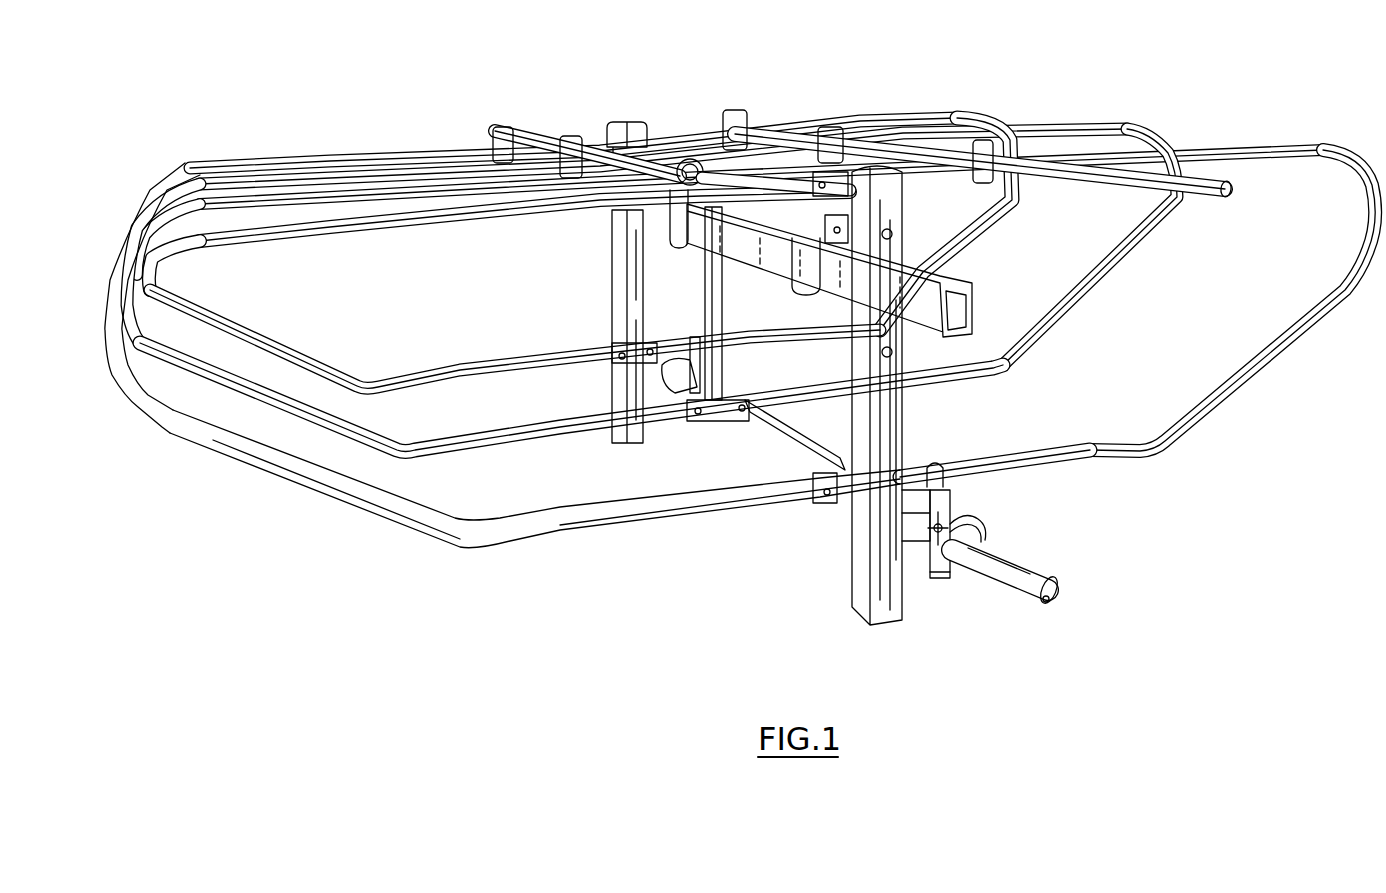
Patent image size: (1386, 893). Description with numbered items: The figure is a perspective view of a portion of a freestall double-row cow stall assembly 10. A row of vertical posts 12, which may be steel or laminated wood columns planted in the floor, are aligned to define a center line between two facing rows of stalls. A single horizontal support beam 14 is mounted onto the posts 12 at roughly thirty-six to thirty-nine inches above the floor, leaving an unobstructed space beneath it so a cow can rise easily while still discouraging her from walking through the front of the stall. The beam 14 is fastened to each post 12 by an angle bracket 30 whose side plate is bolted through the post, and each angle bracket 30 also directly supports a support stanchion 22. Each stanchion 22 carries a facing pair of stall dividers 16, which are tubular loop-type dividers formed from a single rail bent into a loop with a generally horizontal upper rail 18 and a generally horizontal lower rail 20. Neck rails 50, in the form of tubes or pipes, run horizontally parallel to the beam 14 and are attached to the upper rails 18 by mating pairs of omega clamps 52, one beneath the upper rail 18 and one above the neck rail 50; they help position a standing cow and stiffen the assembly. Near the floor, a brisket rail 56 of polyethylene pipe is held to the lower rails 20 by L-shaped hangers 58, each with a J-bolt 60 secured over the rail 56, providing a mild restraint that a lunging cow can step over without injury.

The freestall double-row cow stall assembly 10 is at (92, 218).
The vertical post 12 is at (610, 302).
The support beam 14 is at (712, 238).
The stall divider 16 is at (180, 163).
The upper rail 18 is at (362, 152).
The lower rail 20 is at (478, 408).
The support stanchion 22 is at (628, 288).
The angle bracket 30 is at (818, 311).
The neck rail 50 is at (548, 136).
The omega clamp 52 is at (500, 130).
The brisket rail 56 is at (1043, 566).
The L-shaped hanger 58 is at (940, 560).
The J-bolt 60 is at (968, 527).